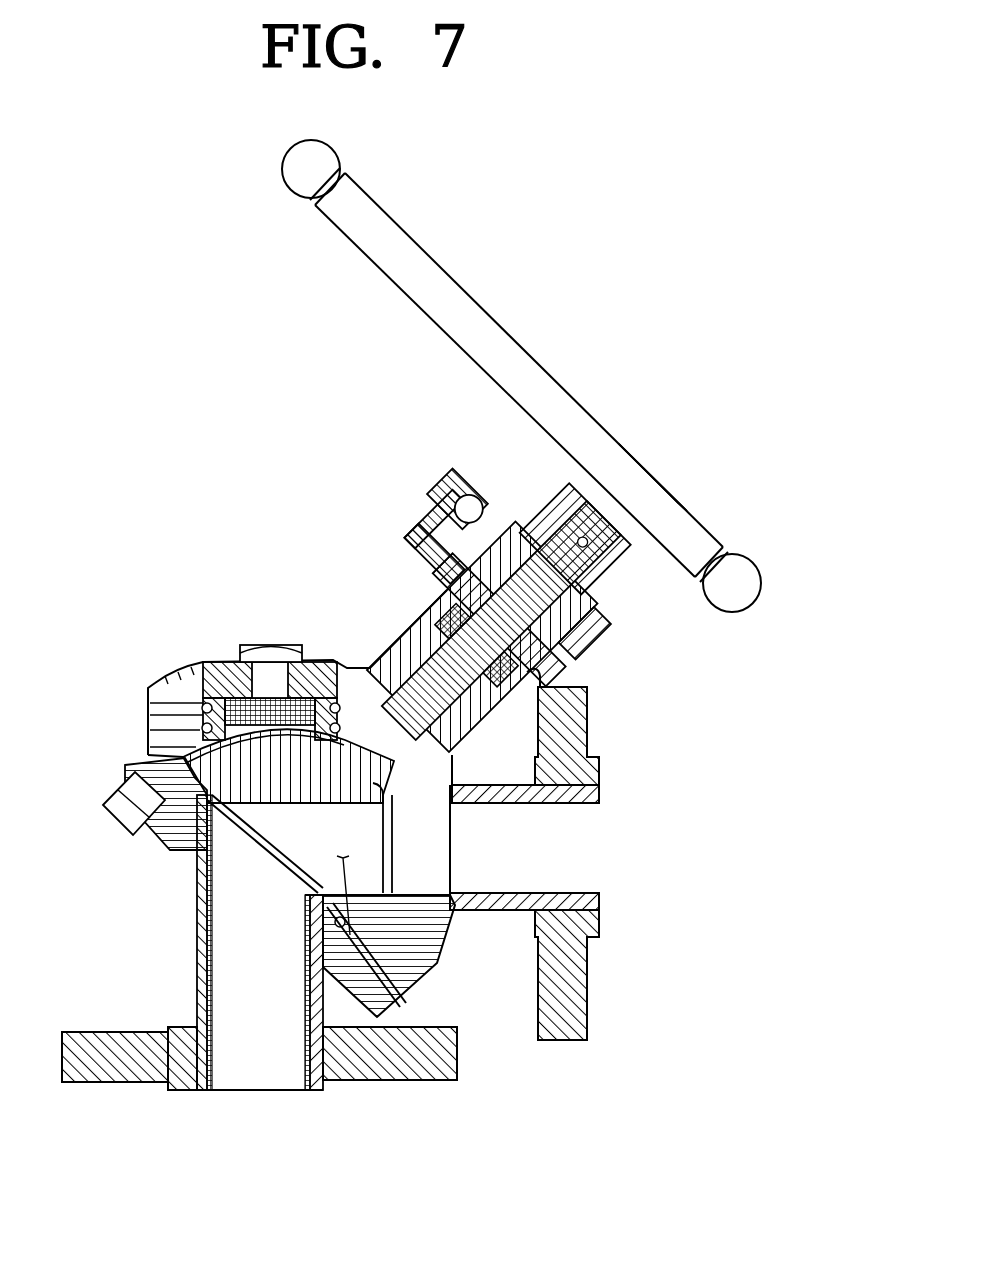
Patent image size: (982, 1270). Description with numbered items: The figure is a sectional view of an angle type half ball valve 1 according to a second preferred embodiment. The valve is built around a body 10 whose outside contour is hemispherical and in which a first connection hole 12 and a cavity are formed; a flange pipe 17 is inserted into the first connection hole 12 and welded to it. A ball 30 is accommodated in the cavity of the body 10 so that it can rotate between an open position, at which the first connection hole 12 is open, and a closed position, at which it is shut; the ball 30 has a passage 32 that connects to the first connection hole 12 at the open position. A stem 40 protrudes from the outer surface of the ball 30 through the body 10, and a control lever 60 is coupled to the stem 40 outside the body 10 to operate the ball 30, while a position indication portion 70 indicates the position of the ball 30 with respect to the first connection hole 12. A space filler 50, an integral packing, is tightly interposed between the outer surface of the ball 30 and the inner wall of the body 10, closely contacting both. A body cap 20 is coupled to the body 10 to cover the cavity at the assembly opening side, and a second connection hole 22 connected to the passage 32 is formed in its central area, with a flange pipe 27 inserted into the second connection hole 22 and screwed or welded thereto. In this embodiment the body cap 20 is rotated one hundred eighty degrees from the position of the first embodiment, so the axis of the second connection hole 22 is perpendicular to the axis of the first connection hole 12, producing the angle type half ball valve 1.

The half ball valve 1 is at (760, 400).
The body 10 is at (147, 703).
The first connection hole 12 is at (448, 836).
The flange pipe 17 is at (585, 713).
The body cap 20 is at (130, 768).
The second connection hole 22 is at (262, 883).
The flange pipe 27 is at (113, 1067).
The ball 30 is at (205, 662).
The passage 32 is at (396, 985).
The stem 40 is at (423, 665).
The space filler 50 is at (390, 912).
The control lever 60 is at (575, 365).
The position indication portion 70 is at (625, 622).